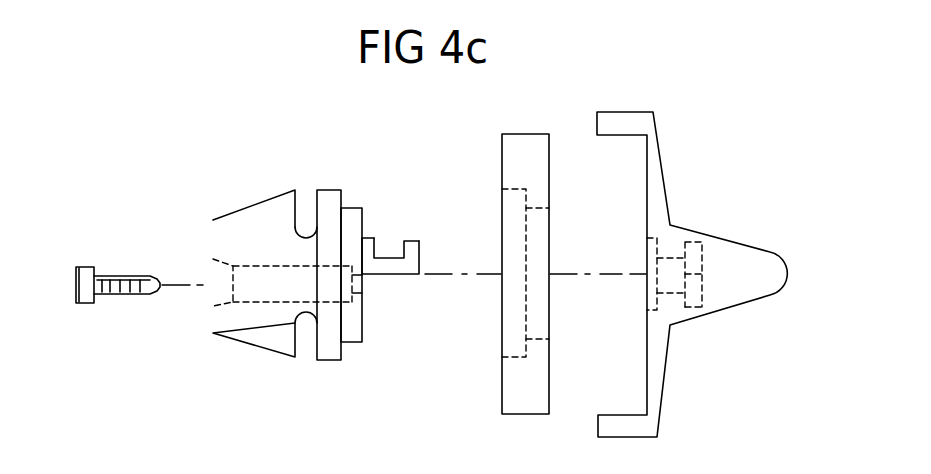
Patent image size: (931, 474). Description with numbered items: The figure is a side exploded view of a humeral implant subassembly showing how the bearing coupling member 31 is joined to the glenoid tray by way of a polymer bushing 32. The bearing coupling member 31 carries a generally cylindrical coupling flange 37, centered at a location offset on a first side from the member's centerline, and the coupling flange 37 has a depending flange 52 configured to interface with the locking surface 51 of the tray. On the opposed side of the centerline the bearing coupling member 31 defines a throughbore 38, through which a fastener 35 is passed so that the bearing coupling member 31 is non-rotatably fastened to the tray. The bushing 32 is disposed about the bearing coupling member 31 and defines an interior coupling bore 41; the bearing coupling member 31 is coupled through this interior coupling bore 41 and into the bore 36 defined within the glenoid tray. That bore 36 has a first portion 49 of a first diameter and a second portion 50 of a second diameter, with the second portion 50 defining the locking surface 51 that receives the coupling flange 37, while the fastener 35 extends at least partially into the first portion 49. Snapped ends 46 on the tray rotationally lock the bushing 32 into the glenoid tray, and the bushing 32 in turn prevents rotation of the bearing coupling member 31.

The fastener 35 is at (130, 277).
The throughbore 38 is at (270, 287).
The bearing coupling member 31 is at (328, 188).
The coupling flange 37 is at (386, 266).
The depending flange 52 is at (408, 245).
The bushing 32 is at (513, 398).
The interior coupling bore 41 is at (540, 303).
The snapped ends 46 is at (618, 122).
The first portion 49 is at (670, 258).
The locking surface 51 is at (702, 242).
The bore 36 is at (703, 276).
The second portion 50 is at (694, 310).